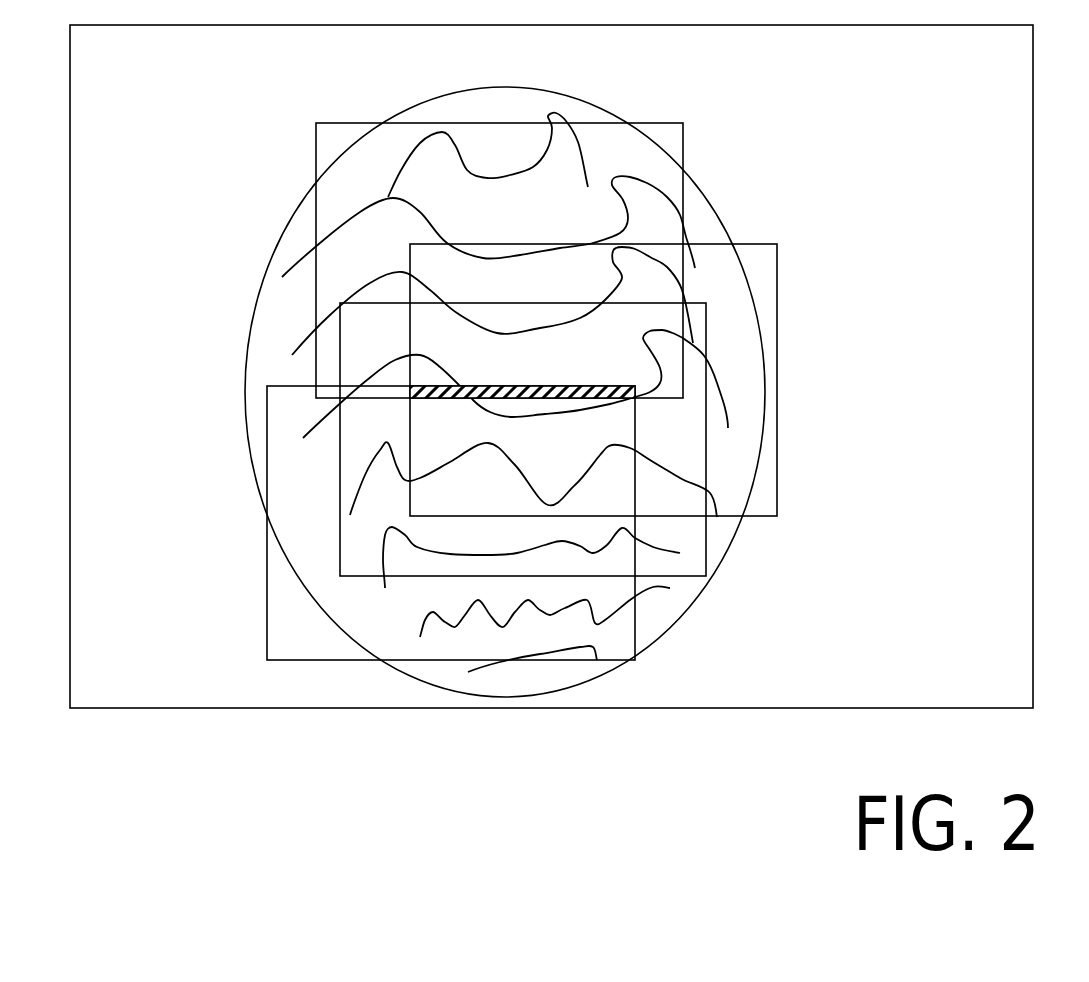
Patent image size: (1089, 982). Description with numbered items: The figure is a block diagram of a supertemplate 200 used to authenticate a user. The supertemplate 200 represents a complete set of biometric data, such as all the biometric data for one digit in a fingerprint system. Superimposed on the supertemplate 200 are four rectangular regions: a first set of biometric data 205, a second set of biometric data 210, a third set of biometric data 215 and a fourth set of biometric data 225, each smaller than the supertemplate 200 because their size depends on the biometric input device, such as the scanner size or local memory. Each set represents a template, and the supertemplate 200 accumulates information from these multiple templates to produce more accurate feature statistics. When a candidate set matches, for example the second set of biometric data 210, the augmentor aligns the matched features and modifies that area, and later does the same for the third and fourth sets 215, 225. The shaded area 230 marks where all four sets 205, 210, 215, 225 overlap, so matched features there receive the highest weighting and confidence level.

The supertemplate 200 is at (325, 65).
The first set of biometric data 205 is at (672, 126).
The second set of biometric data 210 is at (778, 268).
The third set of biometric data 215 is at (707, 553).
The fourth set of biometric data 225 is at (265, 585).
The overlap area 230 is at (568, 389).